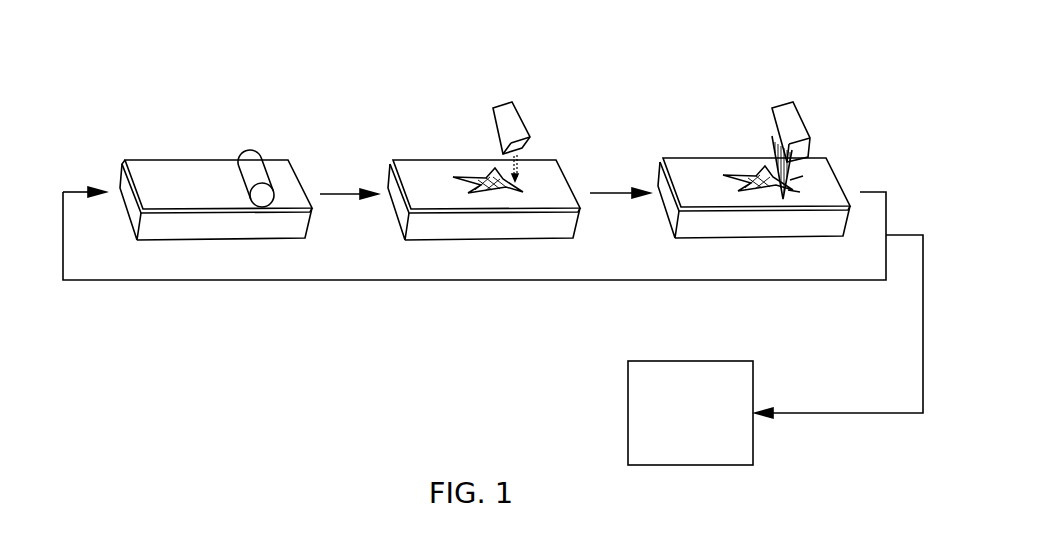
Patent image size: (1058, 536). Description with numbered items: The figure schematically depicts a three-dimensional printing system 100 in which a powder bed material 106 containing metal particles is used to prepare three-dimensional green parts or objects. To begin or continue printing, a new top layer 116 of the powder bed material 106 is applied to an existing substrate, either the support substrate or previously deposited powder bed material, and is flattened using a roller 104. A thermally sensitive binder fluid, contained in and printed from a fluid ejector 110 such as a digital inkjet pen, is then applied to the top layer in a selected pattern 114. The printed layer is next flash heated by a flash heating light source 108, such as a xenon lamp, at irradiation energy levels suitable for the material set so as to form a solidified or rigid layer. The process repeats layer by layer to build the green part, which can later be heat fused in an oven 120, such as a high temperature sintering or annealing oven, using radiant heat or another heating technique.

The three-dimensional printing system 100 is at (175, 62).
The roller 104 is at (251, 162).
The powder bed material 106 is at (213, 222).
The flash heating light source 108 is at (788, 116).
The fluid ejector 110 is at (512, 123).
The selected pattern 114 is at (492, 170).
The top layer 116 is at (129, 186).
The oven 120 is at (670, 424).